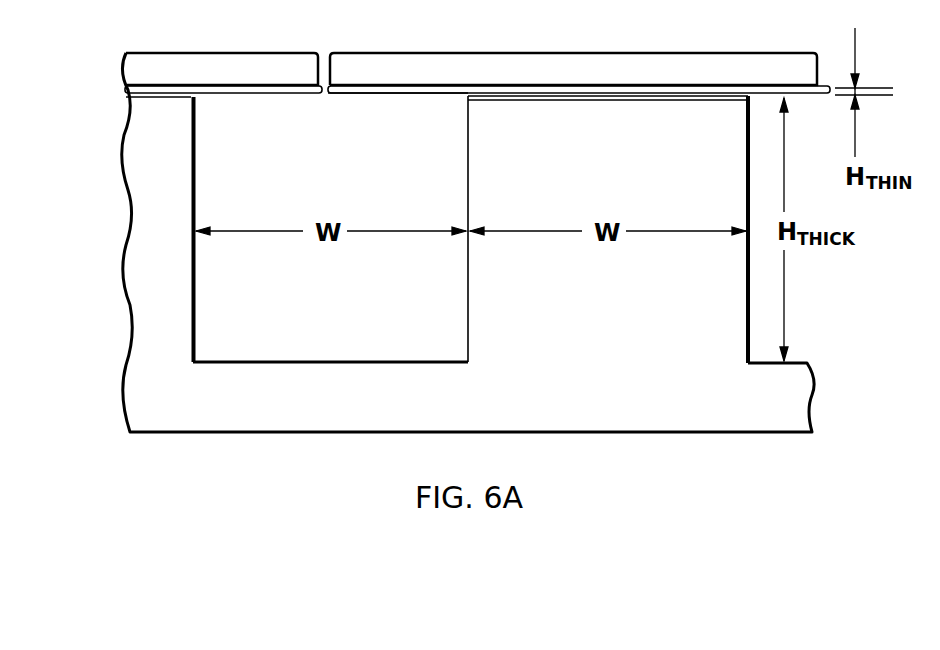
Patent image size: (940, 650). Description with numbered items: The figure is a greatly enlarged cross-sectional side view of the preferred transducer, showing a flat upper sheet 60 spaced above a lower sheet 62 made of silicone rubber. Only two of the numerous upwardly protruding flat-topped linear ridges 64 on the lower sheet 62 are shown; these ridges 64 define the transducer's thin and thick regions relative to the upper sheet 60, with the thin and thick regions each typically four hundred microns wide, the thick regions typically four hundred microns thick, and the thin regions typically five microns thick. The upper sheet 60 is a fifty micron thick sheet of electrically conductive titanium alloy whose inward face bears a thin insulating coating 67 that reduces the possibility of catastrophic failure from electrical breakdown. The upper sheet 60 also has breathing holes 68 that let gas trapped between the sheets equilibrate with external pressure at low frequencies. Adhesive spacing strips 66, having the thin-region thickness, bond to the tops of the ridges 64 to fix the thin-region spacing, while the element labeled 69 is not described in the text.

The upper sheet 60 is at (190, 63).
The lower sheet 62 is at (243, 410).
The flat-topped linear ridges 64 is at (163, 315).
The adhesive spacing strips 66 is at (650, 100).
The thin insulating coating 67 is at (428, 98).
The breathing holes 68 is at (325, 44).
The thin layer under plates 69 is at (325, 100).